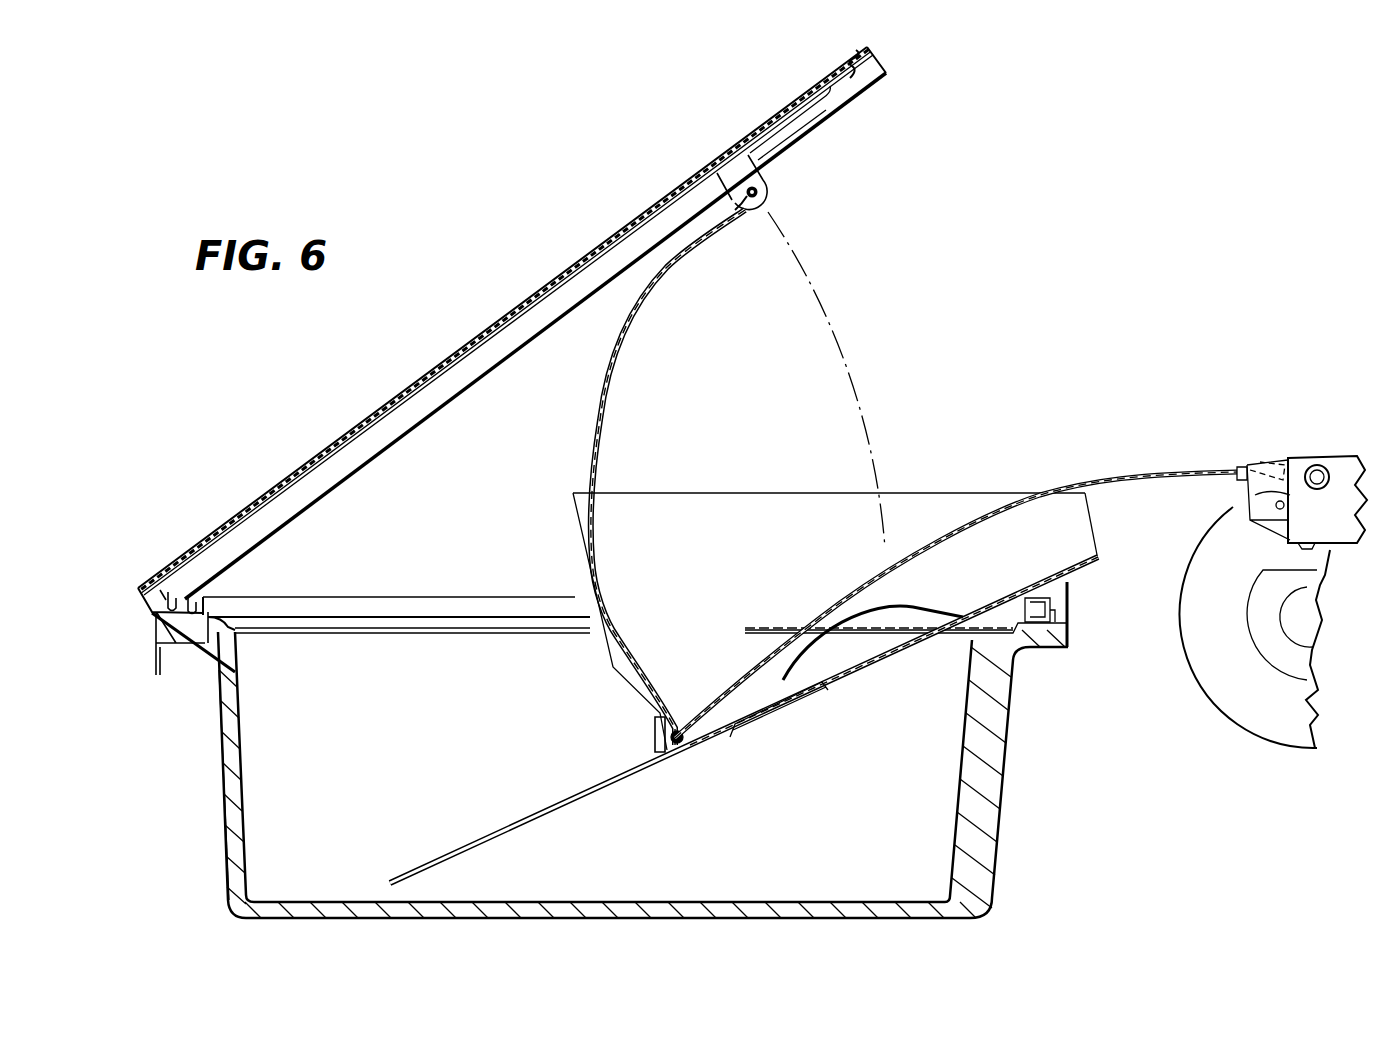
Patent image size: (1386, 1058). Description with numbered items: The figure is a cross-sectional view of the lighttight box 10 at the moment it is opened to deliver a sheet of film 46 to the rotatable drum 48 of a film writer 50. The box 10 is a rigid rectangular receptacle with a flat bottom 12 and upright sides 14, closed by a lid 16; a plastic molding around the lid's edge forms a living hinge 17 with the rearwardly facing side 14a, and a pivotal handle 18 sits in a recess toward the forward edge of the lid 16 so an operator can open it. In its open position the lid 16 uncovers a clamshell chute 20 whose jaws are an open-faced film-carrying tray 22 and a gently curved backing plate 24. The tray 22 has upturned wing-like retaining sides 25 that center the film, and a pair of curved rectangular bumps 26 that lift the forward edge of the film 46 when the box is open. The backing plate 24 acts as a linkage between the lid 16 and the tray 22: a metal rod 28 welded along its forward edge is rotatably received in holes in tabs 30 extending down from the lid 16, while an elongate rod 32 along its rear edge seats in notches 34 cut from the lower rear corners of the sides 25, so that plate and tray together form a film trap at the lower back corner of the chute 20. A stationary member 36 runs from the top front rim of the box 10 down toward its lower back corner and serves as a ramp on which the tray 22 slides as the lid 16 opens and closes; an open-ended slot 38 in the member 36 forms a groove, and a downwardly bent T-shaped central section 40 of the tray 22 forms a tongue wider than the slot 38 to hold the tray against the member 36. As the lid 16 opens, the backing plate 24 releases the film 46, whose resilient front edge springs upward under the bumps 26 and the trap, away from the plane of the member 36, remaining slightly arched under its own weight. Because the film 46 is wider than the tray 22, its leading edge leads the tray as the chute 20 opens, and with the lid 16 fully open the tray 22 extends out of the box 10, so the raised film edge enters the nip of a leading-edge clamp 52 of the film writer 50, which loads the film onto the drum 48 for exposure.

The lighttight box 10 is at (940, 297).
The flat bottom 12 is at (600, 904).
The upright sides 14 is at (1000, 800).
The rearwardly facing side 14a is at (220, 790).
The lid 16 is at (530, 300).
The living hinge 17 is at (152, 612).
The pivotal handle 18 is at (880, 80).
The clamshell chute 20 is at (893, 482).
The film-carrying tray 22 is at (1090, 560).
The backing plate 24 is at (605, 405).
The retaining sides 25 is at (760, 493).
The curved rectangular bumps 26 is at (918, 610).
The metal rod 28 is at (772, 190).
The tabs 30 is at (775, 170).
The elongate rod 32 is at (668, 755).
The notches 34 is at (655, 718).
The stationary member 36 is at (858, 690).
The open-ended slot 38 is at (700, 745).
The T-shaped central section 40 is at (745, 735).
The film 46 is at (1100, 480).
The rotatable drum 48 is at (1180, 597).
The film writer 50 is at (1282, 452).
The leading-edge clamp 52 is at (1280, 462).